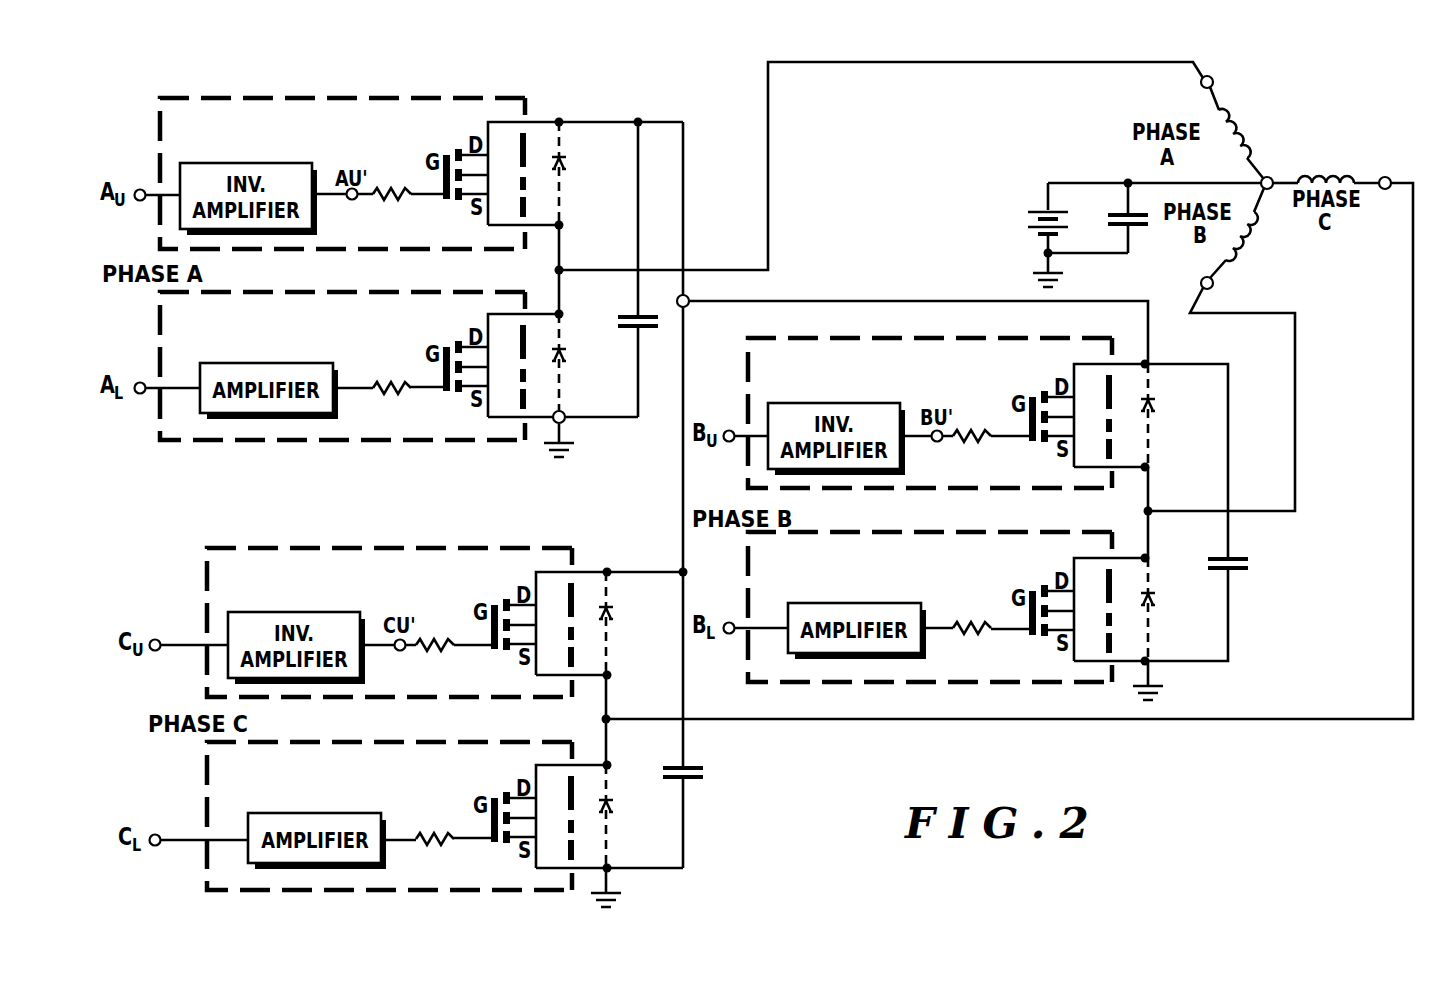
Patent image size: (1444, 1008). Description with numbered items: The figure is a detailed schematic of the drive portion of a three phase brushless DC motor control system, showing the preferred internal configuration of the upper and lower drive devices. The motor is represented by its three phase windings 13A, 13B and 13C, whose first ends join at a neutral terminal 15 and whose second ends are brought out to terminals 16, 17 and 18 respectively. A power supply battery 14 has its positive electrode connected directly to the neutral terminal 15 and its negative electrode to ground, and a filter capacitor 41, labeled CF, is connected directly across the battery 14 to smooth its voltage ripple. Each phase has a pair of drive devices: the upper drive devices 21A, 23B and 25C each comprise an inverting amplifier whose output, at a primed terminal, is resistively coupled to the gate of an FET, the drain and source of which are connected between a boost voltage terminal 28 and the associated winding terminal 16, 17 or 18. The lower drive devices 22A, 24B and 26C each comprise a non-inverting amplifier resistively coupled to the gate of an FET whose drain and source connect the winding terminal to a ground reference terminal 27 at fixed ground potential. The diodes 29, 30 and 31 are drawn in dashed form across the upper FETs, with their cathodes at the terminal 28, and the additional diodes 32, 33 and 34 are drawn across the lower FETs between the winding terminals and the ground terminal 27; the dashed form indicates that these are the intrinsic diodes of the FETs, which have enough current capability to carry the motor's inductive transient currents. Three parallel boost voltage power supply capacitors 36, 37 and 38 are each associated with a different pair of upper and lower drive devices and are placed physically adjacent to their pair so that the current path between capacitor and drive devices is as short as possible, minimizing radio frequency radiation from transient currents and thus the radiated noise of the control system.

The phase A motor winding 13A is at (1232, 118).
The phase B motor winding 13B is at (1262, 222).
The phase C motor winding 13C is at (1354, 168).
The power supply battery 14 is at (1038, 208).
The neutral terminal 15 is at (1270, 176).
The second end terminal of phase A winding 16 is at (1213, 78).
The second end terminal of phase B winding 17 is at (1200, 281).
The second end terminal of phase C winding 18 is at (1385, 190).
The upper drive switching device 21A is at (352, 98).
The lower drive switching device 22A is at (353, 292).
The upper drive switching device 23B is at (938, 338).
The lower drive switching device 24B is at (938, 532).
The upper drive switching device 25C is at (397, 548).
The lower drive switching device 26C is at (397, 742).
The ground reference terminal 27 is at (566, 412).
The boost voltage terminal 28 is at (686, 306).
The upper drive device diode 29 is at (565, 163).
The upper drive device diode 30 is at (1155, 403).
The upper drive device diode 31 is at (613, 612).
The additional diode 32 is at (565, 356).
The additional diode 33 is at (1155, 598).
The additional diode 34 is at (613, 807).
The boost voltage power supply circuit capacitor 36 is at (632, 313).
The boost voltage power supply circuit capacitor 37 is at (1226, 556).
The boost voltage power supply circuit capacitor 38 is at (680, 765).
The filter capacitor 41 is at (1120, 213).